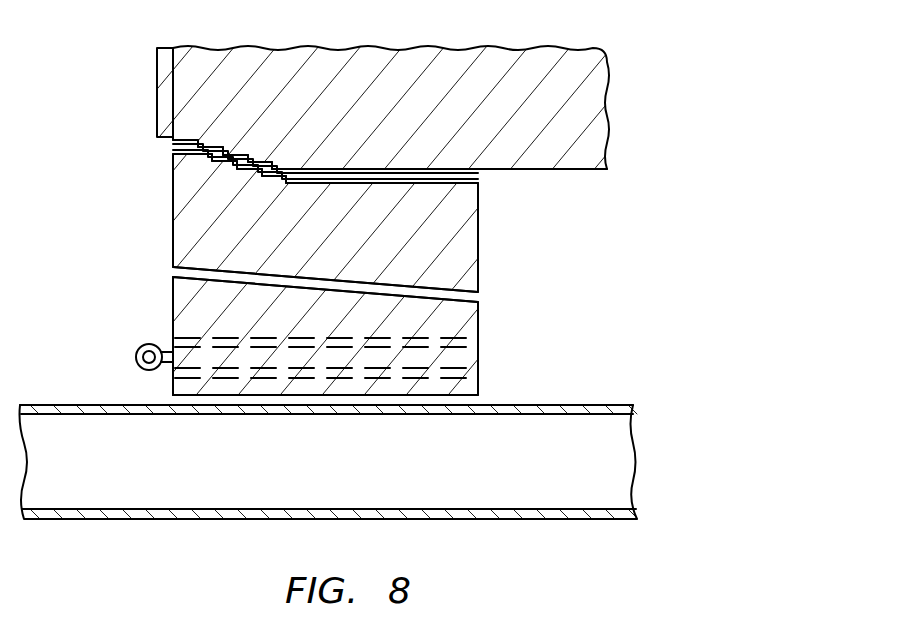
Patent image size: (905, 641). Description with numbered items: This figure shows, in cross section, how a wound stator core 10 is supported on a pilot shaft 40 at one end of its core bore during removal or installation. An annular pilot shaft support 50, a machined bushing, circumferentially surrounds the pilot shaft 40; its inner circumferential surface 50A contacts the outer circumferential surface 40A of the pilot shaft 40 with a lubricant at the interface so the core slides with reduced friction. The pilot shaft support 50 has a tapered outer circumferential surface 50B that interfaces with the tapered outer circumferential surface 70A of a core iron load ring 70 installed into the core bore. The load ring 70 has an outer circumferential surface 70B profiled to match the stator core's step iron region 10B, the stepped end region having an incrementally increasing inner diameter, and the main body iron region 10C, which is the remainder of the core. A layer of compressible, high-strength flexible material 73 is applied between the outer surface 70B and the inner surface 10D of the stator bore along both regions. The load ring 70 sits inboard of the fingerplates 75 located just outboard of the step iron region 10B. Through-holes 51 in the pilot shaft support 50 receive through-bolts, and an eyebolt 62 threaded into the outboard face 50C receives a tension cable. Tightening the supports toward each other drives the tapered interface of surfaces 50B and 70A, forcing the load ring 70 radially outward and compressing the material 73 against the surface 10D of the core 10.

The stator core 10 is at (200, 92).
The step iron region 10B is at (212, 135).
The main body iron region 10C is at (303, 157).
The inner surface of the stator bore 10D is at (587, 169).
The fingerplates 75 is at (167, 55).
The compressible high-strength flexible material 73 is at (388, 175).
The core iron load ring 70 is at (173, 215).
The tapered outer circumferential surface 70A is at (447, 293).
The outer circumferential surface 70B is at (457, 176).
The annular pilot shaft support 50 is at (173, 290).
The inner circumferential surface 50A is at (313, 395).
The tapered outer circumferential surface 50B is at (203, 280).
The outboard face 50C is at (173, 325).
The through-holes 51 is at (440, 368).
The eyebolt 62 is at (136, 355).
The pilot shaft 40 is at (535, 520).
The outer circumferential surface 40A is at (570, 403).